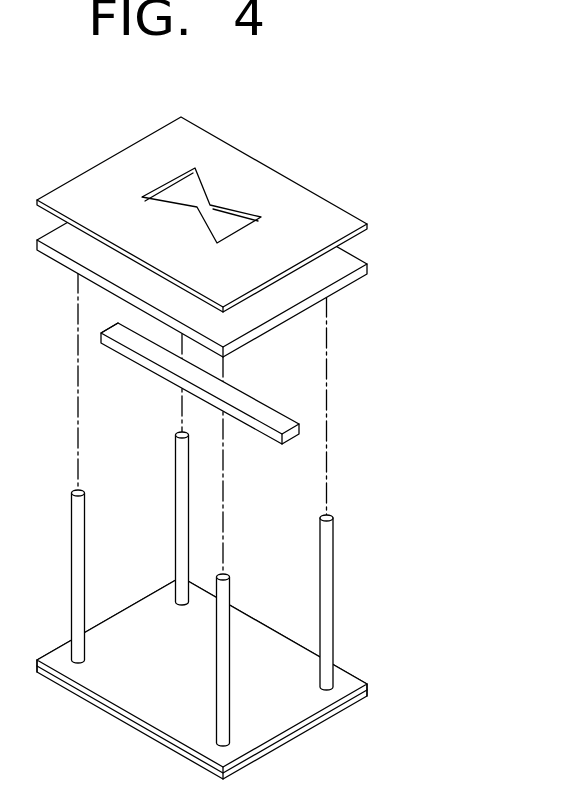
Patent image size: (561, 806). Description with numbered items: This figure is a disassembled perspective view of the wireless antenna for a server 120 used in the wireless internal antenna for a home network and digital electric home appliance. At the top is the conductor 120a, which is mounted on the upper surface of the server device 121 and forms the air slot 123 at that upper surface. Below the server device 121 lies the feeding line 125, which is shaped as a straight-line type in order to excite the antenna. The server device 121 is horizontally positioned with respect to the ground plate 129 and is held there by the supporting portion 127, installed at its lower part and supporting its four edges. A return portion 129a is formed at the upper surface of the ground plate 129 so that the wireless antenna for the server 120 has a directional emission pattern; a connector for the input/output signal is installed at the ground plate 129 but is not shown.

The wireless antenna for a server 120 is at (284, 231).
The conductor 120a is at (237, 209).
The server device 121 is at (338, 262).
The air slot 123 is at (225, 217).
The feeding line 125 is at (290, 425).
The supporting portion 127 is at (327, 562).
The ground plate 129 is at (250, 678).
The return portion 129a is at (283, 717).